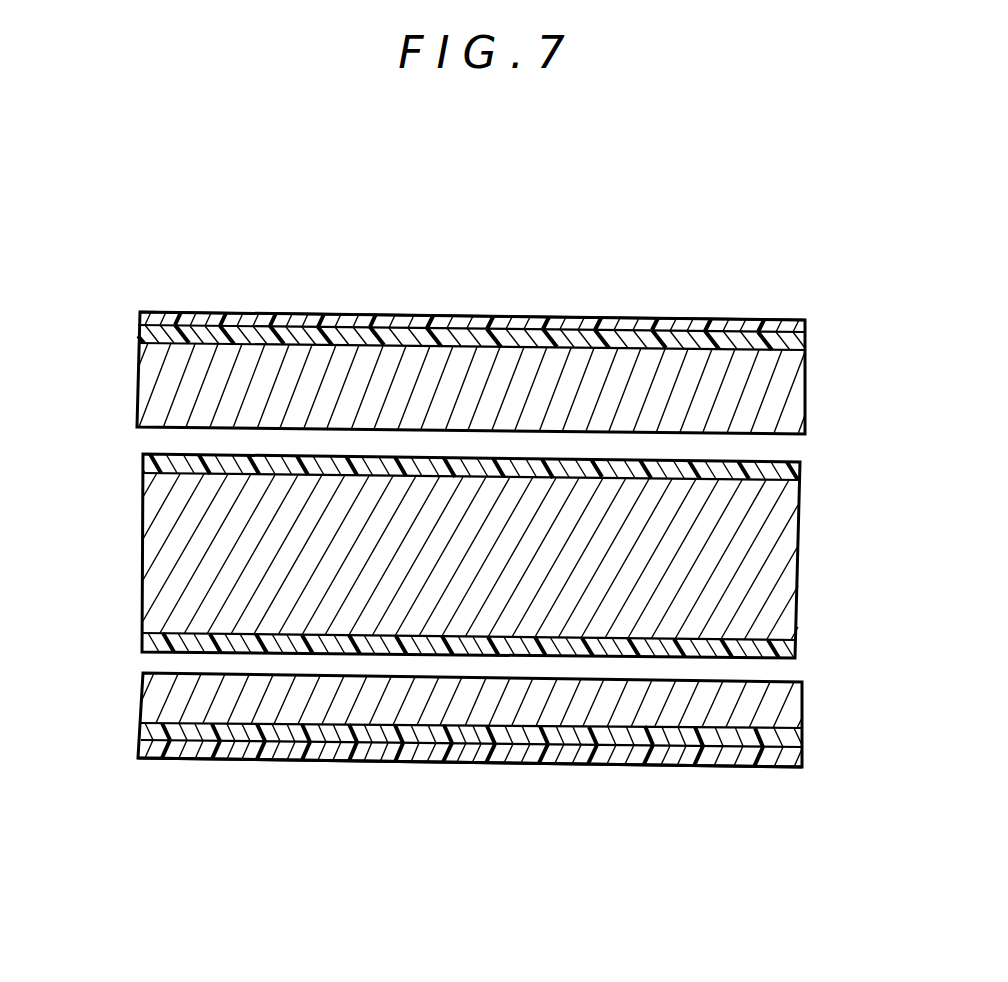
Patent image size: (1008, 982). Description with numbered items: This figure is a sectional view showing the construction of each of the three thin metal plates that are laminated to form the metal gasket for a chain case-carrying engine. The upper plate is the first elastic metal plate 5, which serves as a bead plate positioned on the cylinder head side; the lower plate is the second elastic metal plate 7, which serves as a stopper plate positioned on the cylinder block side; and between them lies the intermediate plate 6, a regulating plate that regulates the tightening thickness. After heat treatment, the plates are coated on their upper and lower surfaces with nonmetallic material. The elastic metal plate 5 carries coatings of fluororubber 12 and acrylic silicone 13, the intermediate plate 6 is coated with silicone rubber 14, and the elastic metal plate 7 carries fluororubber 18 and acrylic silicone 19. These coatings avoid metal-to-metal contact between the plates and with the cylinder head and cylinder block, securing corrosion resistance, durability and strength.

The elastic metal plate 5 is at (787, 382).
The intermediate plate 6 is at (776, 566).
The elastic metal plate 7 is at (785, 708).
The fluororubber 12 is at (506, 322).
The acrylic silicone 13 is at (275, 314).
The silicone rubber 14 is at (780, 458).
The fluororubber 18 is at (485, 737).
The acrylic silicone 19 is at (687, 767).